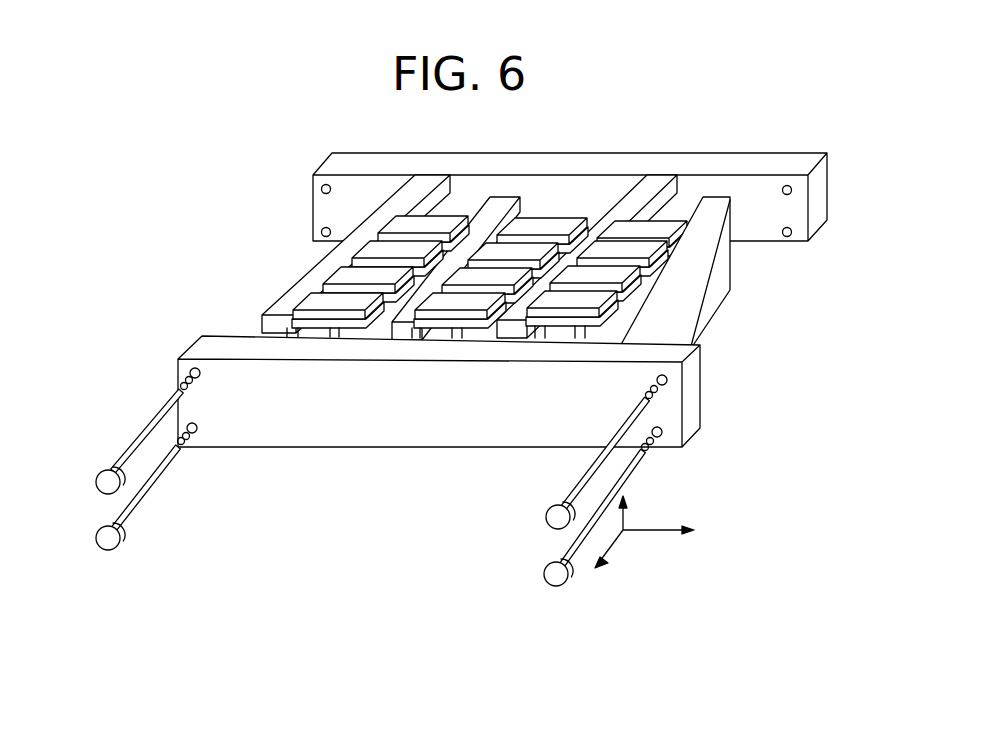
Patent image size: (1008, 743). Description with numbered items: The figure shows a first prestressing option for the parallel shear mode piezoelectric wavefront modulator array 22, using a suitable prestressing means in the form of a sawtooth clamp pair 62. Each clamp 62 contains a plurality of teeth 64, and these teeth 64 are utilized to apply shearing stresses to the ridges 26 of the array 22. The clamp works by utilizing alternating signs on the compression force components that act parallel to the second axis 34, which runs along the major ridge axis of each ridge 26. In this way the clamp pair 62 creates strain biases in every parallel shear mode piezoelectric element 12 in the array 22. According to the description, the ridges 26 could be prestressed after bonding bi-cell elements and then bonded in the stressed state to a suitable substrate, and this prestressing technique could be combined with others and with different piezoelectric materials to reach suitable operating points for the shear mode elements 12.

The parallel shear mode piezoelectric element 12 is at (300, 331).
The parallel shear mode piezoelectric wavefront modulator array 22 is at (461, 342).
The ridges 26 is at (293, 297).
The second axis 34 is at (613, 535).
The sawtooth clamp pair 62 is at (461, 342).
The teeth 64 is at (458, 262).